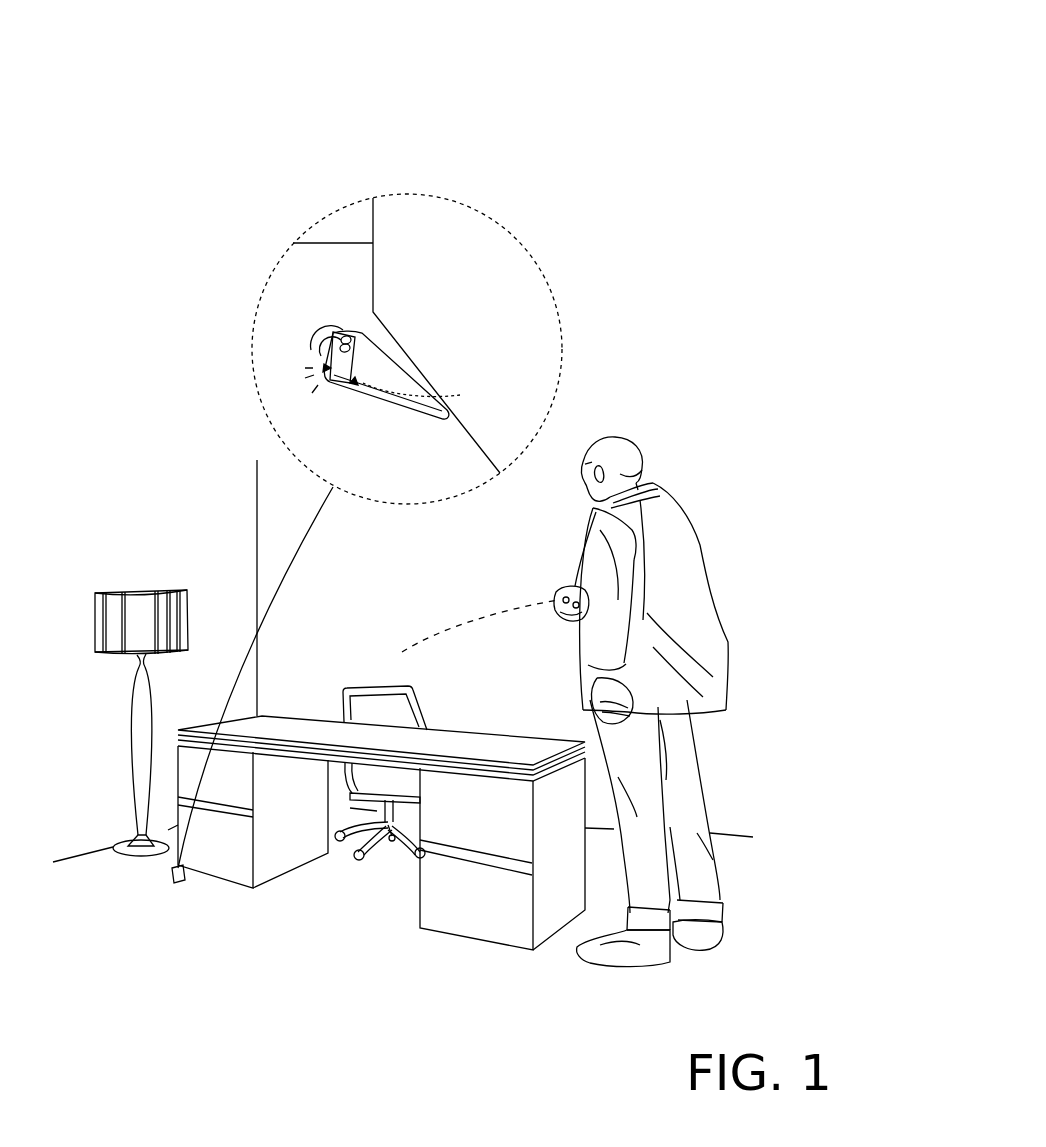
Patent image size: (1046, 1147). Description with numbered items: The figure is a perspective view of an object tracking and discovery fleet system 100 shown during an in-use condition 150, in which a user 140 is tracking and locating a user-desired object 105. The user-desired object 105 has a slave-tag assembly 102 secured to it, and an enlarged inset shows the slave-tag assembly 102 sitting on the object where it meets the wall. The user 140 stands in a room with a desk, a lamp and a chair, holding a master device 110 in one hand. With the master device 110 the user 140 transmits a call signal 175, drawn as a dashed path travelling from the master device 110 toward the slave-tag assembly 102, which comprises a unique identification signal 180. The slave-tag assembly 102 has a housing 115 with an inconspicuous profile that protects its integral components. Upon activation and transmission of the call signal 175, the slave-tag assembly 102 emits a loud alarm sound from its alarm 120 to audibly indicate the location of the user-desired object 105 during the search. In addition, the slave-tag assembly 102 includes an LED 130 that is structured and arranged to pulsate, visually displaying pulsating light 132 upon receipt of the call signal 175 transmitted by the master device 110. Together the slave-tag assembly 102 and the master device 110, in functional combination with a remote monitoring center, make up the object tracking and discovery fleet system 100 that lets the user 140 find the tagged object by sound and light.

The object tracking and discovery fleet system 100 is at (574, 77).
The slave-tag assembly 102 is at (613, 110).
The in-use condition 150 is at (657, 143).
The user-desired object 105 is at (438, 422).
The master device 110 is at (567, 585).
The housing 115 is at (360, 369).
The alarm 120 is at (358, 355).
The LED 130 is at (360, 383).
The pulsating light 132 is at (311, 345).
The user 140 is at (697, 616).
The call signal 175 is at (432, 647).
The unique identification signal 180 is at (390, 678).